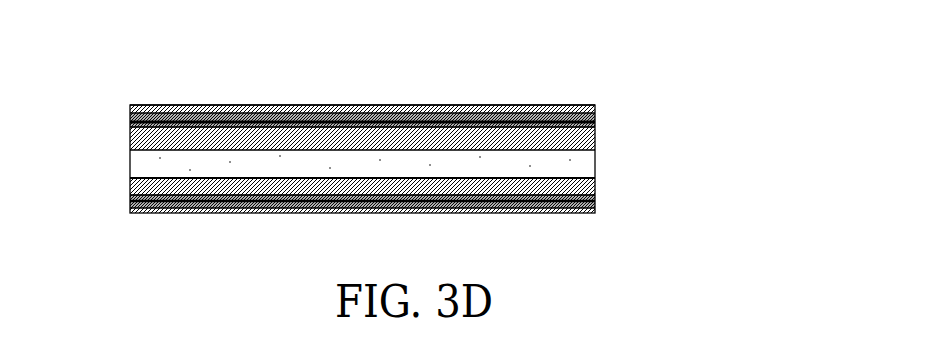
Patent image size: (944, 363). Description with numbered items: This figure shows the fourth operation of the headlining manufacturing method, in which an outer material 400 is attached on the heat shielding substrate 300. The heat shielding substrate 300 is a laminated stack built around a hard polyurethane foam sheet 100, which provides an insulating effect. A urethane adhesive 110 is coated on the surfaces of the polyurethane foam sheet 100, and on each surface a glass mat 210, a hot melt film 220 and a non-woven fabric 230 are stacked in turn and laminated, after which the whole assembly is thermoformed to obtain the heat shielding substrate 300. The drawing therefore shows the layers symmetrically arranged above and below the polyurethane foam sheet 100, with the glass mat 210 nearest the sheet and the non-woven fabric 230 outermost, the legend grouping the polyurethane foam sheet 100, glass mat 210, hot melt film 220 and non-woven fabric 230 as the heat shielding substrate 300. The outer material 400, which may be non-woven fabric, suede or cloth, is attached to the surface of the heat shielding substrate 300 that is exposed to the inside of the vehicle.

The polyurethane foam sheet 100 is at (588, 158).
The urethane adhesive 110 is at (283, 145).
The glass mat 210 is at (595, 123).
The hot melt film 220 is at (130, 124).
The non-woven fabric 230 is at (595, 105).
The heat shielding substrate 300 is at (785, 88).
The outer material 400 is at (475, 107).